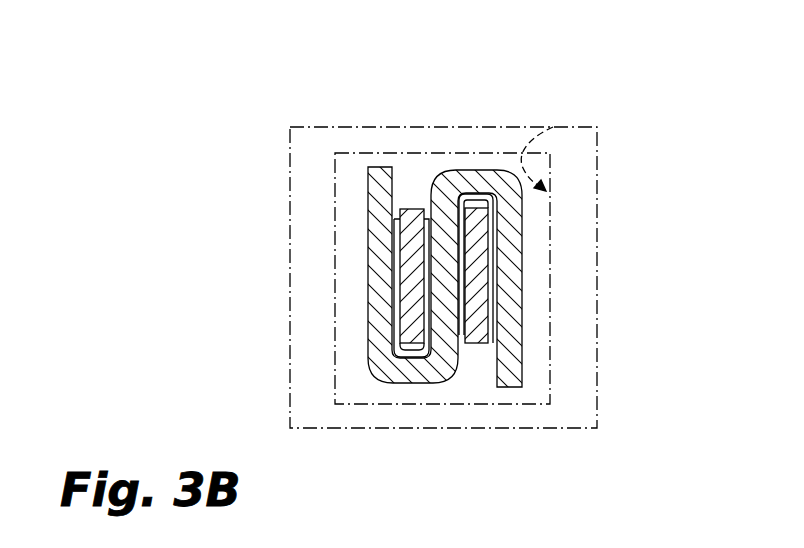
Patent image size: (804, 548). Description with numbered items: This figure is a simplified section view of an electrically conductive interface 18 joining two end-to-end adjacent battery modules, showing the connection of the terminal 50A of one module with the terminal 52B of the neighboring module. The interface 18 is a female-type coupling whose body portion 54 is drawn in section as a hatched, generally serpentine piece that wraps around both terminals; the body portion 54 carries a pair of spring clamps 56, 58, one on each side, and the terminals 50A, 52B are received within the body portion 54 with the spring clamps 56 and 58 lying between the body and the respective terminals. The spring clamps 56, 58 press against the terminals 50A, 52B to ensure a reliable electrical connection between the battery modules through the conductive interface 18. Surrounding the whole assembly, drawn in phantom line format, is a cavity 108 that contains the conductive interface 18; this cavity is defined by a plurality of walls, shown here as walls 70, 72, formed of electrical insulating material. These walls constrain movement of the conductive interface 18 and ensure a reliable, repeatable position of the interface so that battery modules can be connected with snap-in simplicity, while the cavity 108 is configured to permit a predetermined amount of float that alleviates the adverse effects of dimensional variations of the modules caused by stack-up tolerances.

The conductive interface 18 is at (354, 350).
The terminal 50A is at (411, 209).
The terminal 52B is at (474, 344).
The body portion 54 is at (484, 171).
The spring clamp 56 is at (399, 218).
The spring clamp 58 is at (462, 335).
The wall 70 is at (578, 411).
The wall 72 is at (475, 137).
The cavity 108 is at (553, 127).